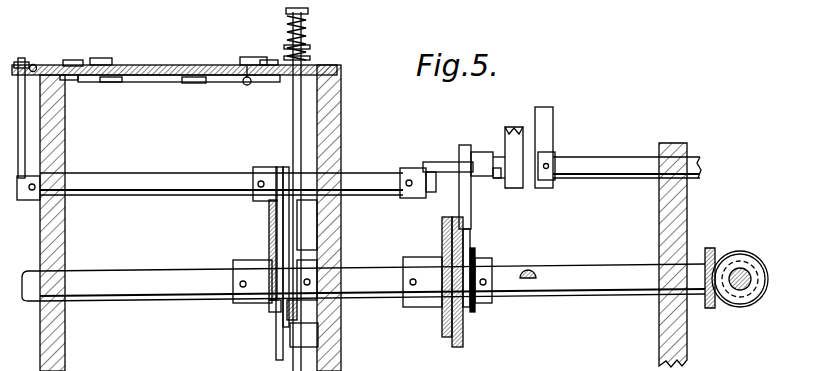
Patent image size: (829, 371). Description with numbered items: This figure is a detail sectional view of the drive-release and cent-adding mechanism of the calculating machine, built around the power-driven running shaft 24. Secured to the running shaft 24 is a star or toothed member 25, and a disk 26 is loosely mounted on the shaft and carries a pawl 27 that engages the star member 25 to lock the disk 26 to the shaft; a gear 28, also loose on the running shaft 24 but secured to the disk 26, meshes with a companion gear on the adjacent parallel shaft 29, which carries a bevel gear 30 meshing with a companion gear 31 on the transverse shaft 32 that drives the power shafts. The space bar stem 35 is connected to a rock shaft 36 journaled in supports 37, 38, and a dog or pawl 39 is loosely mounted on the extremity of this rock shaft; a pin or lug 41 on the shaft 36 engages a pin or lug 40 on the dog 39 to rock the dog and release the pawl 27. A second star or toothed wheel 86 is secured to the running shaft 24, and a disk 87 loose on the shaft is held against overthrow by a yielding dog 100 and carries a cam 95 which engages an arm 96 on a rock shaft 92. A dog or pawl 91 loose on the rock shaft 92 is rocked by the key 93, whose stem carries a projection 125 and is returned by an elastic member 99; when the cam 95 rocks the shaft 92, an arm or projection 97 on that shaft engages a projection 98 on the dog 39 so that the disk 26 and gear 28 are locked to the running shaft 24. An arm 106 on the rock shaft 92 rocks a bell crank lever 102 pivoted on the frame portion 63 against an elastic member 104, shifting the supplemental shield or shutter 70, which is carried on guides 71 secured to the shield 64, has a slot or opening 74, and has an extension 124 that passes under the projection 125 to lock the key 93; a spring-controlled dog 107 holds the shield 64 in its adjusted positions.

The elastic member 104 is at (33, 66).
The bell crank lever 102 is at (76, 54).
The guides 71 is at (108, 60).
The supplemental shield or shutter 70 is at (148, 66).
The slot or opening 74 is at (185, 66).
The extension 124 is at (274, 63).
The projection 125 is at (288, 11).
The key 93 is at (308, 14).
The elastic member 99 is at (306, 50).
The portion of the frame work 63 is at (67, 78).
The shield 64 is at (160, 83).
The spring-controlled dog 107 is at (215, 83).
The arm 106 is at (20, 143).
The rock shaft 92 is at (185, 180).
The dog or pawl 91 is at (283, 172).
The arm 96 is at (290, 218).
The cam 95 is at (274, 256).
The running shaft 24 is at (170, 286).
The star or toothed wheel 86 is at (330, 250).
The disk 87 is at (288, 292).
The yielding dog 100 is at (290, 364).
The dog or pawl 39 is at (462, 158).
The pin or lug 41 is at (484, 150).
The support 37 is at (513, 130).
The stem 35 is at (548, 134).
The rock shaft 36 is at (614, 146).
The support 38 is at (672, 150).
The projection 98 is at (442, 166).
The arm or projection 97 is at (418, 202).
The pin or lug 40 is at (498, 180).
The star or toothed member 25 is at (472, 252).
The pawl 27 is at (490, 259).
The shaft 29 is at (584, 266).
The disk 26 is at (458, 328).
The gear 28 is at (446, 336).
The bevel gear 30 is at (712, 254).
The companion gear 31 is at (752, 262).
The shaft 32 is at (742, 290).